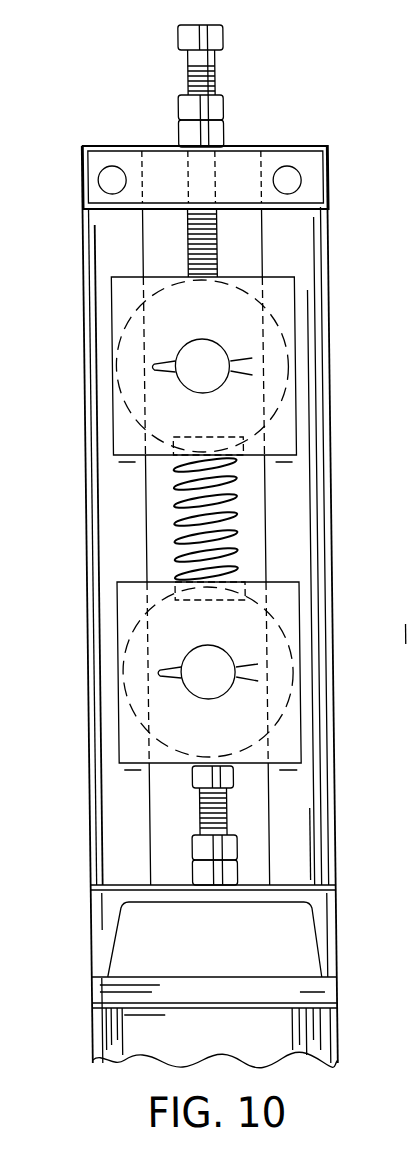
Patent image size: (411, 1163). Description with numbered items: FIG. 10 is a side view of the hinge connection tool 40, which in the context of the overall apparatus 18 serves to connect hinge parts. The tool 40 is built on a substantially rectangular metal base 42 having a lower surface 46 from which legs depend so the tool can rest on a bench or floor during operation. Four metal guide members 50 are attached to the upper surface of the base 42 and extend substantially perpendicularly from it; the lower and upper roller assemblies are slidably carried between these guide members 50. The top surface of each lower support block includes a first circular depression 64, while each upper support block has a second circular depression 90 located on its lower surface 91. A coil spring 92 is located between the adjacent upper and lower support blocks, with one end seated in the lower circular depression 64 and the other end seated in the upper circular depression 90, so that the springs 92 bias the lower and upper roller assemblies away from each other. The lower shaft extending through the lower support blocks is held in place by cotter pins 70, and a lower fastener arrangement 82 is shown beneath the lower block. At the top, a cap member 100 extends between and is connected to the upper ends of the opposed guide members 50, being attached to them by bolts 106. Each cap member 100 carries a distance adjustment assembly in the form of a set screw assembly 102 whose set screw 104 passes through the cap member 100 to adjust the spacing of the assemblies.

The belt tensioning apparatus 18 is at (400, 519).
The hinge connection tool 40 is at (313, 121).
The base 42 is at (322, 902).
The lower surface 46 is at (213, 1003).
The guide members 50 is at (90, 793).
The first circular depression 64 is at (165, 596).
The cotter pins 70 is at (148, 366).
The lower adjusting bolt and nuts 82 is at (192, 812).
The second circular depression 90 is at (166, 443).
The lower surface 91 is at (276, 458).
The coil spring 92 is at (165, 514).
The cap member 100 is at (311, 157).
The set screw assembly 102 is at (246, 65).
The set screw 104 is at (187, 78).
The bolts 106 is at (103, 182).